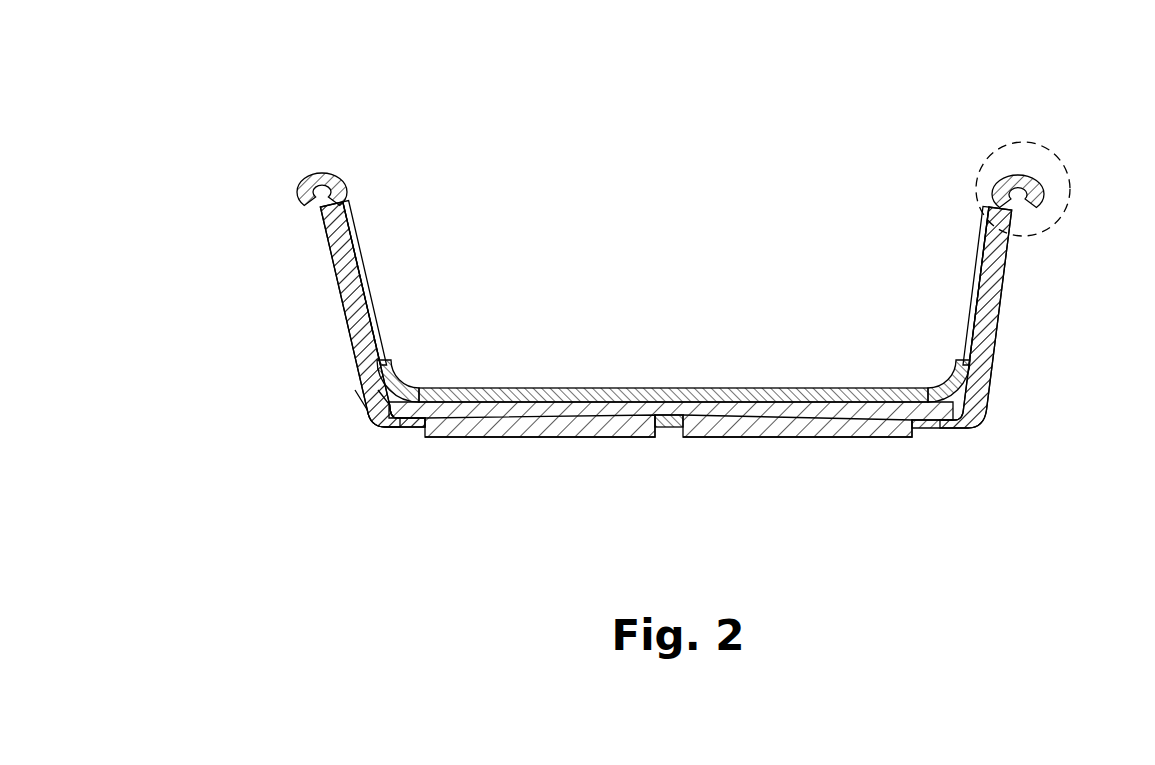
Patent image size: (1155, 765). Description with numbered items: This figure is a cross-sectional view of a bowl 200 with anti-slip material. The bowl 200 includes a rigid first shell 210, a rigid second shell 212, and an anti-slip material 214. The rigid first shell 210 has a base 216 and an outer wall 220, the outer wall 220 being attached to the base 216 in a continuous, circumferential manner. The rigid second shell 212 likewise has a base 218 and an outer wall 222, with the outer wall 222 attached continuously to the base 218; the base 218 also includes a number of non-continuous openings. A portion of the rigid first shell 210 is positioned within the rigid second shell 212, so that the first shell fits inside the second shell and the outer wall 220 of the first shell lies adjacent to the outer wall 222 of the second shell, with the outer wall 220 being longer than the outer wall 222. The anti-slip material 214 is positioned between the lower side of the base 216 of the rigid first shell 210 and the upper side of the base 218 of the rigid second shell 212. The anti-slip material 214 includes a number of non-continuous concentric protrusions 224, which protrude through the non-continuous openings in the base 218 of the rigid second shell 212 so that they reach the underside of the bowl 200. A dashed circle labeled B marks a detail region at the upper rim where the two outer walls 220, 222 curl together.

The bowl 200 is at (233, 86).
The rigid first shell 210 is at (356, 249).
The rigid second shell 212 is at (340, 300).
The anti-slip material 214 is at (370, 428).
The base of the rigid first shell 216 is at (948, 357).
The base of the rigid second shell 218 is at (960, 442).
The outer wall of the rigid first shell 220 is at (975, 172).
The outer wall of the rigid second shell 222 is at (1030, 212).
The non-continuous concentric protrusions 224 is at (425, 483).
The detail B region B is at (1062, 162).